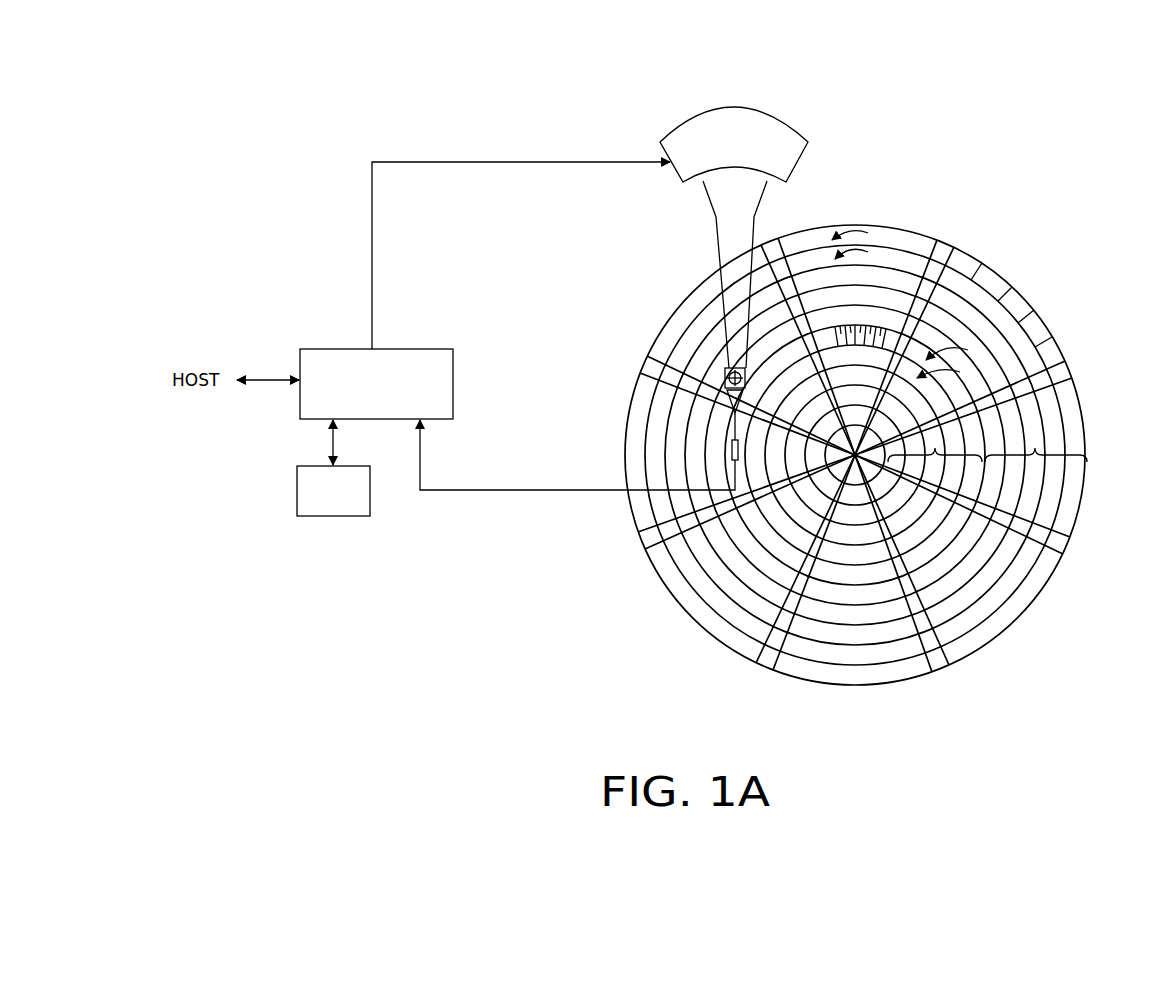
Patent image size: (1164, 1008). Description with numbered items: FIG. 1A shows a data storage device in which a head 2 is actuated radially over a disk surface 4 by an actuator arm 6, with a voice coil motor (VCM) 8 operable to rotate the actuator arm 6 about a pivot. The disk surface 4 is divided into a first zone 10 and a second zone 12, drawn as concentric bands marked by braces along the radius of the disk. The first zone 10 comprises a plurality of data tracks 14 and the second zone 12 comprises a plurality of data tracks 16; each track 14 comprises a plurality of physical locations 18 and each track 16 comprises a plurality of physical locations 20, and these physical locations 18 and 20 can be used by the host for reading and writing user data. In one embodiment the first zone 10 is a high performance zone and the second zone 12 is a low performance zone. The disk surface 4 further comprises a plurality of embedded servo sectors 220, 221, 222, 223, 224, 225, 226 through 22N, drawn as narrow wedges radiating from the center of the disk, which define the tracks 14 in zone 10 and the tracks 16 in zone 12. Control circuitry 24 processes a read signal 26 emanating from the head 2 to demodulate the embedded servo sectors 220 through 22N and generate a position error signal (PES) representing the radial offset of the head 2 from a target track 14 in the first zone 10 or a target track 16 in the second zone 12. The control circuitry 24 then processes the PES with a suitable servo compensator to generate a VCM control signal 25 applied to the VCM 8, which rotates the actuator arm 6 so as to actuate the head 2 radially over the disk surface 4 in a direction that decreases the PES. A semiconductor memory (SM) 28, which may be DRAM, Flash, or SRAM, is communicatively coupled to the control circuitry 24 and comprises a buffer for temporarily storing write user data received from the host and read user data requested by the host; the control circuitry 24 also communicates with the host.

The head 2 is at (729, 447).
The disk surface 4 is at (1088, 423).
The actuator arm 6 is at (717, 245).
The voice coil motor 8 is at (683, 183).
The first zone 10 is at (1035, 448).
The second zone 12 is at (935, 448).
The data tracks 14 is at (850, 235).
The data tracks 16 is at (975, 345).
The physical locations 18 is at (1060, 332).
The physical locations 20 is at (890, 322).
The embedded servo sector 220 is at (946, 246).
The embedded servo sector 221 is at (1068, 372).
The embedded servo sector 222 is at (1066, 545).
The embedded servo sector 223 is at (940, 668).
The embedded servo sector 224 is at (765, 667).
The embedded servo sector 225 is at (642, 543).
The embedded servo sector 226 is at (643, 365).
The embedded servo sector 22N is at (788, 230).
The control circuitry 24 is at (424, 349).
The VCM control signal 25 is at (372, 290).
The read signal 26 is at (518, 490).
The semiconductor memory 28 is at (297, 485).